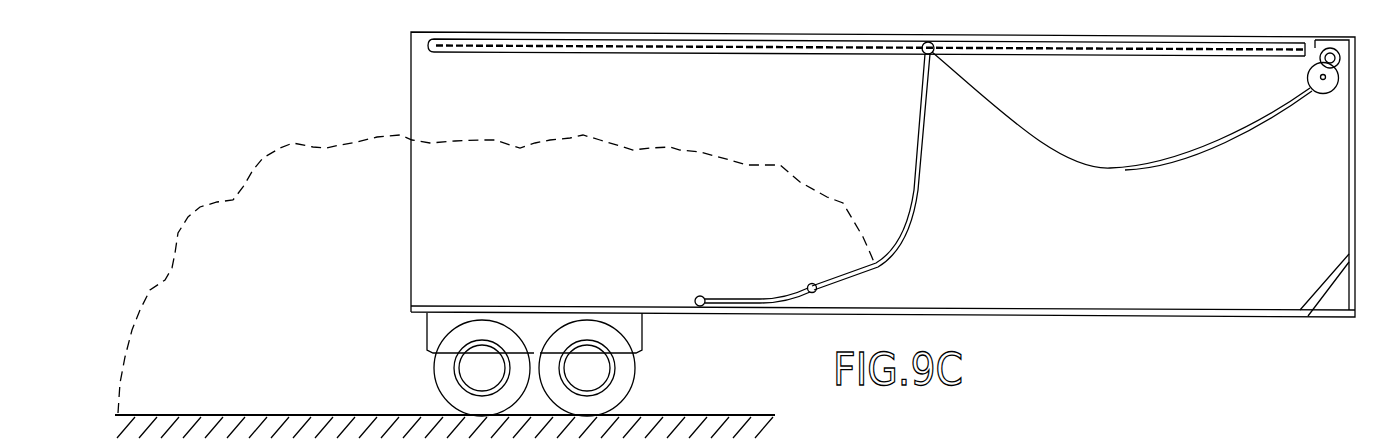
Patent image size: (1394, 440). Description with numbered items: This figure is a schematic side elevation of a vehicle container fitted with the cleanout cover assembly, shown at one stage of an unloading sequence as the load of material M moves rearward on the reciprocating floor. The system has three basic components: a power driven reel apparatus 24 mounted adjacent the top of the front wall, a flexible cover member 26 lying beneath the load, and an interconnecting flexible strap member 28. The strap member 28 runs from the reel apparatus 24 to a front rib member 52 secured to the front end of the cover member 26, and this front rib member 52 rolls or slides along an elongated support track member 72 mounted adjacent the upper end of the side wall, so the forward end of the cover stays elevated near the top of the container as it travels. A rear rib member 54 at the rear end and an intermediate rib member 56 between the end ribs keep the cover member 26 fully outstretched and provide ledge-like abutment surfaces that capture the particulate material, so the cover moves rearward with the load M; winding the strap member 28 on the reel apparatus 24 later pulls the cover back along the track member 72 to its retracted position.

The support track member 72 is at (760, 48).
The front rib member 52 is at (934, 42).
The reel apparatus 24 is at (1306, 79).
The strap member 28 is at (1100, 167).
The cover member 26 is at (743, 298).
The rear rib member 54 is at (695, 298).
The intermediate rib member 56 is at (812, 283).
The material load M is at (583, 135).